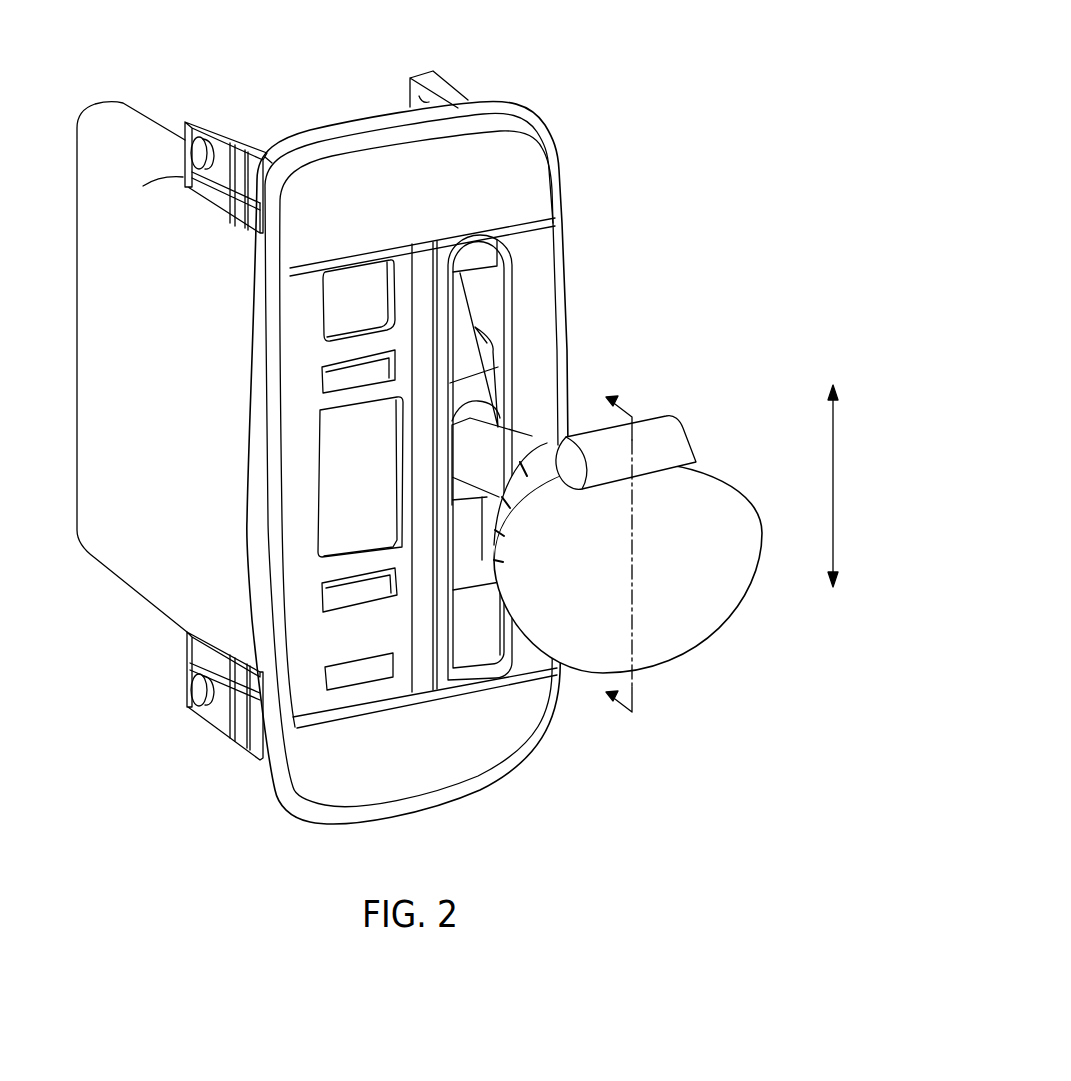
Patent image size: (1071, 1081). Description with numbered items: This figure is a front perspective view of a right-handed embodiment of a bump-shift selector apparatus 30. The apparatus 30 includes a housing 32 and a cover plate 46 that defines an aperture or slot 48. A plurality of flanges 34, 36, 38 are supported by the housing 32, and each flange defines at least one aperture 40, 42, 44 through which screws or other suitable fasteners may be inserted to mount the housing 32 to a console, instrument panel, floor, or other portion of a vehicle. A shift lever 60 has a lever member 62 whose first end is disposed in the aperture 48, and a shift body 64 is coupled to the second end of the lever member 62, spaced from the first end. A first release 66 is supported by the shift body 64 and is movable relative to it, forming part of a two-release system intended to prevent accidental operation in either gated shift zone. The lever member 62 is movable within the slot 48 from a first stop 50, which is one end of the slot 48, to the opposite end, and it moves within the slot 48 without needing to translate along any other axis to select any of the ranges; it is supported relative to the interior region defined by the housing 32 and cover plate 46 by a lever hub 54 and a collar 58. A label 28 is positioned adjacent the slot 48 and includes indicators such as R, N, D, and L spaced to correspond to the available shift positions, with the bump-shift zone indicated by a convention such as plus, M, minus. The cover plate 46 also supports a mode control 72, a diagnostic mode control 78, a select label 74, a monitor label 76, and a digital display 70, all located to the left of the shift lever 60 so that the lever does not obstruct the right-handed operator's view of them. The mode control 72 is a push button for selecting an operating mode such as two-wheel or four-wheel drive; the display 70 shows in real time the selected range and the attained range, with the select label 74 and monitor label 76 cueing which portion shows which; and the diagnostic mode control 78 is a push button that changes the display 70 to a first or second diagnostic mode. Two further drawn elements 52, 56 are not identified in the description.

The label 28 is at (424, 690).
The shift selector apparatus 30 is at (542, 422).
The housing 32 is at (75, 230).
The flange 34 is at (202, 153).
The flange 36 is at (445, 92).
The flange 38 is at (200, 696).
The aperture 40 is at (191, 150).
The aperture 42 is at (421, 101).
The aperture 44 is at (191, 690).
The cover plate 46 is at (542, 162).
The aperture 48 is at (513, 300).
The first stop 50 is at (477, 246).
The slot lower surface 52 is at (476, 618).
The lever hub 54 is at (478, 368).
The knob ring 56 is at (494, 566).
The collar 58 is at (498, 416).
The shift lever 60 is at (651, 521).
The lever member 62 is at (492, 489).
The shift body 64 is at (744, 516).
The first release 66 is at (650, 428).
The display 70 is at (530, 534).
The mode control 72 is at (354, 272).
The select label 74 is at (354, 378).
The monitor label 76 is at (358, 592).
The diagnostic mode control 78 is at (362, 680).